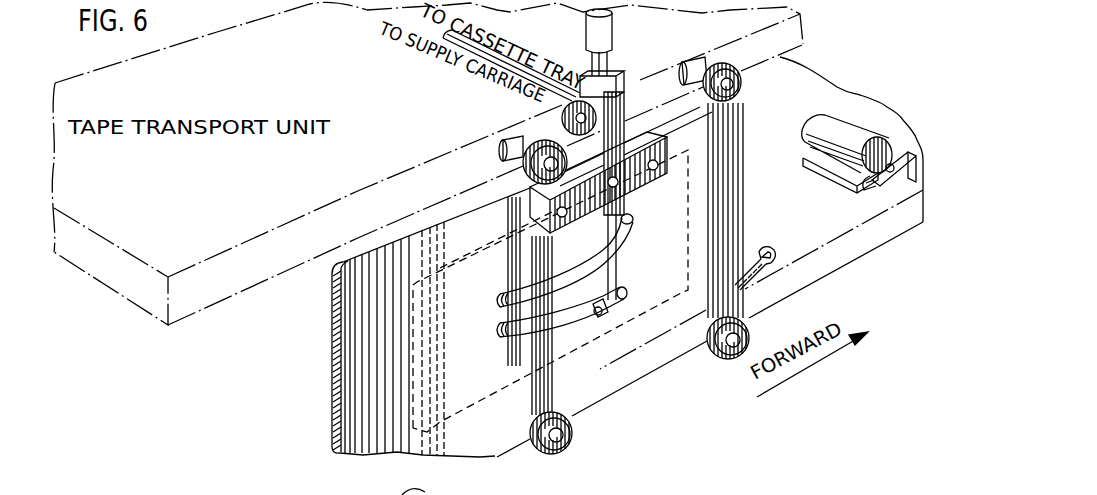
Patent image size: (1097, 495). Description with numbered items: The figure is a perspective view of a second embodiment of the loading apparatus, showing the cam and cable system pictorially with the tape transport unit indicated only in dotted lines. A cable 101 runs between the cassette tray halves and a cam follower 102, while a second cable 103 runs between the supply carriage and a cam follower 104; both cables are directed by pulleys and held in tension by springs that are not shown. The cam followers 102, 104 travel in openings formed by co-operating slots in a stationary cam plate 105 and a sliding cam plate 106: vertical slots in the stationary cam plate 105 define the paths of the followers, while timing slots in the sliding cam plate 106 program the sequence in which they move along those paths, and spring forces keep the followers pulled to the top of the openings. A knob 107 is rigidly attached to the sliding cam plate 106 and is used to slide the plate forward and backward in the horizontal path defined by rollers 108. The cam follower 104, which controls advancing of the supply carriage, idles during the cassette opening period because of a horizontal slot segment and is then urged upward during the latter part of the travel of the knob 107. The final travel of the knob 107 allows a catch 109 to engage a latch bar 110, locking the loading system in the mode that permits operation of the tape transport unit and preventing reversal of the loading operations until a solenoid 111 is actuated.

The cable 101 is at (511, 59).
The cam follower 102 is at (633, 226).
The cable 103 is at (511, 76).
The cam follower 104 is at (595, 307).
The stationary cam plate 105 is at (413, 360).
The sliding cam plate 106 is at (333, 317).
The knob 107 is at (614, 33).
The rollers 108 is at (720, 350).
The catch 109 is at (773, 253).
The latch bar 110 is at (890, 165).
The solenoid 111 is at (843, 137).